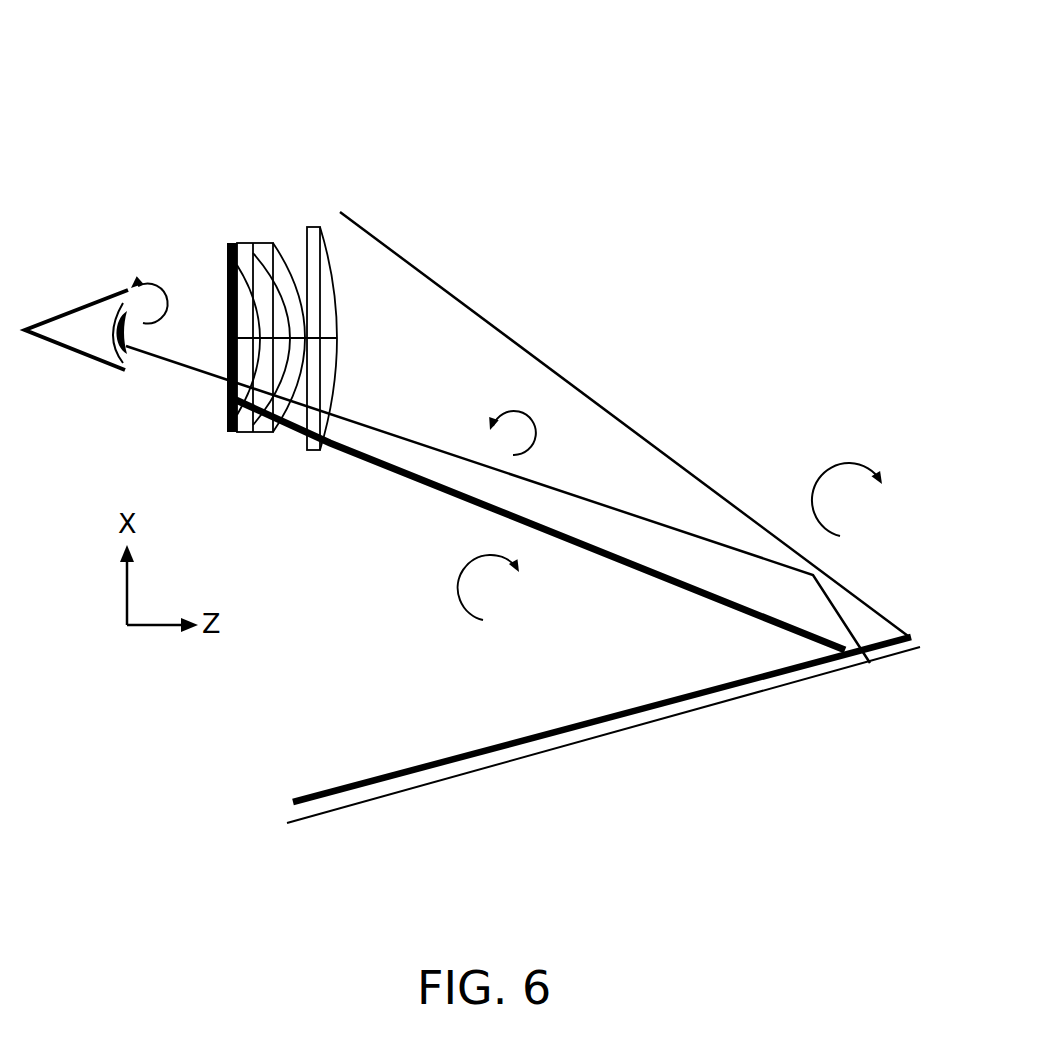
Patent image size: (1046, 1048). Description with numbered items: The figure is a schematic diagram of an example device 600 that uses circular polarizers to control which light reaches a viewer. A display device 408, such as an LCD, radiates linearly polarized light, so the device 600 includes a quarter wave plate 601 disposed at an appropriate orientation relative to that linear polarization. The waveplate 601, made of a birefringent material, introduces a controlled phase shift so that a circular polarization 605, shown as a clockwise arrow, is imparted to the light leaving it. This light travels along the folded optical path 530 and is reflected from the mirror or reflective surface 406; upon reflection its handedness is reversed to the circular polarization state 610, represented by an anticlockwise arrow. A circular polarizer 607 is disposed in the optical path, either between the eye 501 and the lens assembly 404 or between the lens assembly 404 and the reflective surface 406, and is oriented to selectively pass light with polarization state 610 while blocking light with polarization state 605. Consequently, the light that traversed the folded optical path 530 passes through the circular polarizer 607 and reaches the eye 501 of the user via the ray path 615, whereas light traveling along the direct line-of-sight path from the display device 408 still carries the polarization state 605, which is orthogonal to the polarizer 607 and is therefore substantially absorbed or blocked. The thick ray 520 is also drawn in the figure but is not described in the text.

The device 600 is at (247, 102).
The lens assembly 404 is at (331, 238).
The eye 501 is at (88, 302).
The ray path 615 is at (220, 370).
The circular polarizer 607 is at (230, 432).
The folded optical path 530 is at (462, 455).
The circular polarization state 610 is at (538, 433).
The reflective surface 406 is at (628, 429).
The circular polarization 605 is at (857, 525).
The light ray 520 is at (720, 600).
The quarter wave plate 601 is at (363, 780).
The display device 408 is at (807, 683).